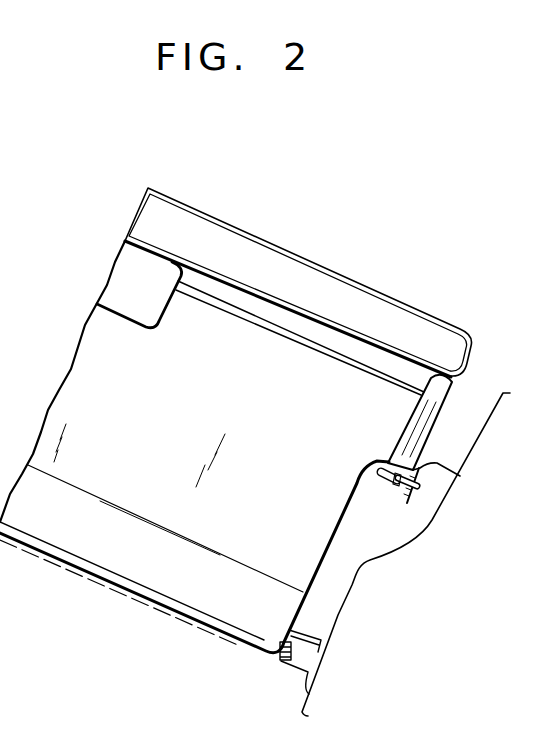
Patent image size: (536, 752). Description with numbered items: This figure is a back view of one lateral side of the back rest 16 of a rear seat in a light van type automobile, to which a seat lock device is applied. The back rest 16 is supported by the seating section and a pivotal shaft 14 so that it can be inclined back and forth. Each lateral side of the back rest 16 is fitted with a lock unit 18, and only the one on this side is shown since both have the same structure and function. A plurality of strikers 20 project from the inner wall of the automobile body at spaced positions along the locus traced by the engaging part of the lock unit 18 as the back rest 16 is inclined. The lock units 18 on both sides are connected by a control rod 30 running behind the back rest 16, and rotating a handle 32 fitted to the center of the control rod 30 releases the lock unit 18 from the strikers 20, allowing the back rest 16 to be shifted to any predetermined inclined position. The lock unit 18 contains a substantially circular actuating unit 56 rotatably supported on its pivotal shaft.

The back rest 16 is at (336, 271).
The handle 32 is at (154, 302).
The control rod 30 is at (283, 335).
The lock unit 18 is at (439, 404).
The striker 20 is at (421, 465).
The actuating unit 56 is at (393, 483).
The pivotal shaft 14 is at (280, 652).